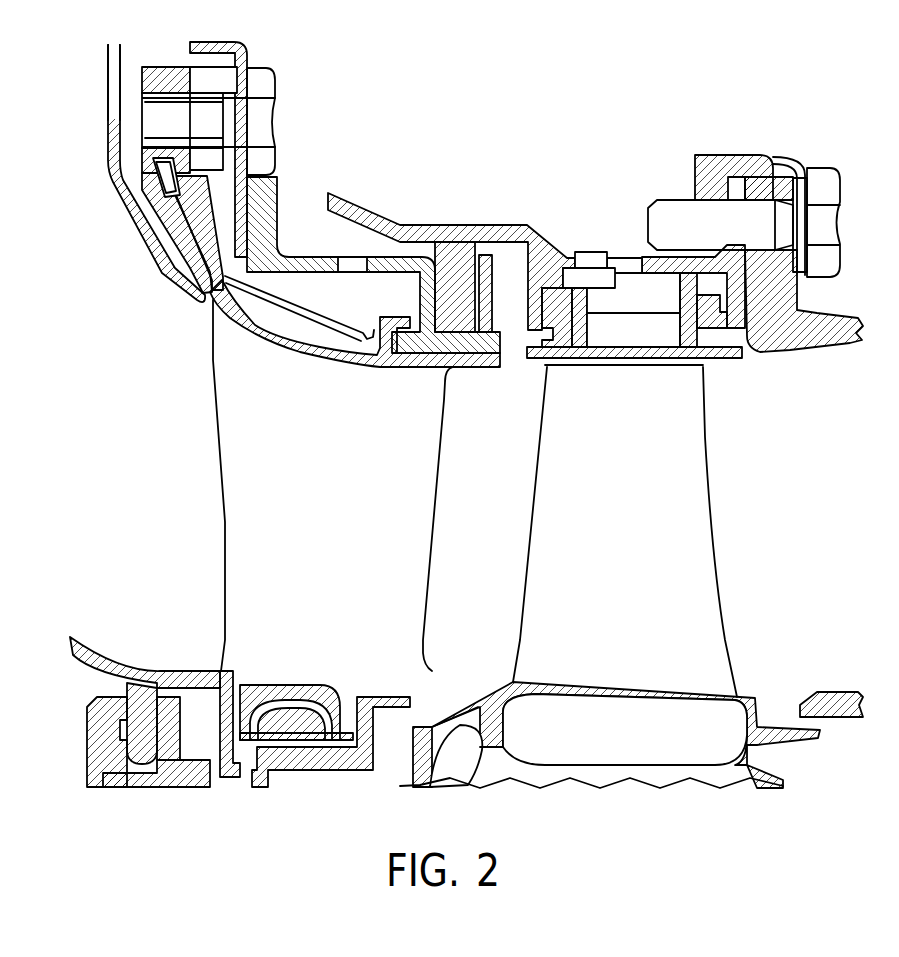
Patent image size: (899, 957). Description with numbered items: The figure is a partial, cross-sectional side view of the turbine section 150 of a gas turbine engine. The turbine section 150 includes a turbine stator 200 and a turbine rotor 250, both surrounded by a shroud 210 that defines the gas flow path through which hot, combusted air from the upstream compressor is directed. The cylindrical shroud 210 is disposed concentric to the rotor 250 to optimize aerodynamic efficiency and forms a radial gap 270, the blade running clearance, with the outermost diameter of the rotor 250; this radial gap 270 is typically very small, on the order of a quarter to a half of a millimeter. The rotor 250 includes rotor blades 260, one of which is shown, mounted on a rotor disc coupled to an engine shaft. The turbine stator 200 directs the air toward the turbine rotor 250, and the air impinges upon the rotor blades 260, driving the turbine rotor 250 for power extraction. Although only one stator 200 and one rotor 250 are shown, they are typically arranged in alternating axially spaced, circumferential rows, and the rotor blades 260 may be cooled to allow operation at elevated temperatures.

The turbine section 150 is at (383, 108).
The turbine stator 200 is at (227, 522).
The shroud 210 is at (567, 194).
The turbine rotor 250 is at (756, 606).
The rotor blades 260 is at (698, 452).
The radial gap 270 is at (716, 369).